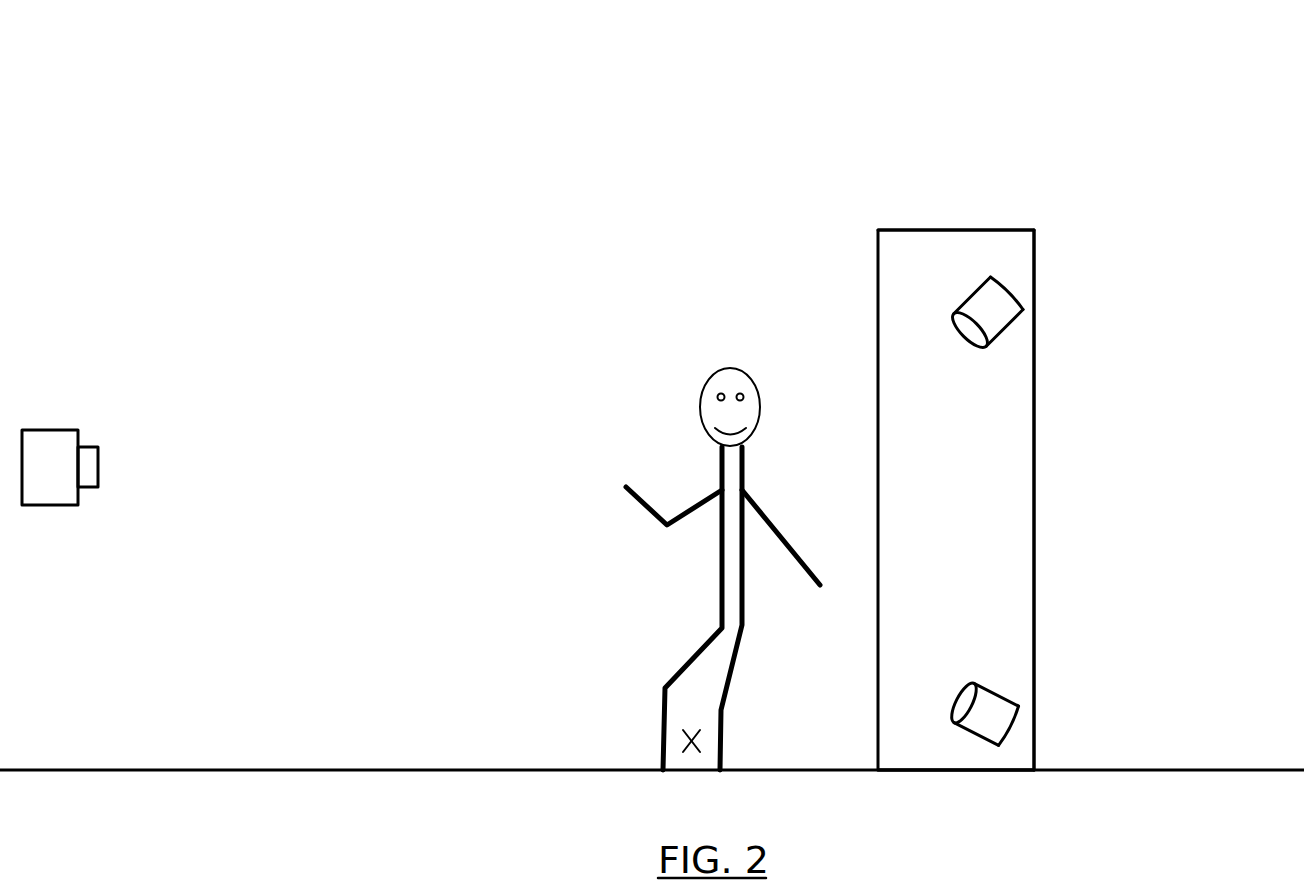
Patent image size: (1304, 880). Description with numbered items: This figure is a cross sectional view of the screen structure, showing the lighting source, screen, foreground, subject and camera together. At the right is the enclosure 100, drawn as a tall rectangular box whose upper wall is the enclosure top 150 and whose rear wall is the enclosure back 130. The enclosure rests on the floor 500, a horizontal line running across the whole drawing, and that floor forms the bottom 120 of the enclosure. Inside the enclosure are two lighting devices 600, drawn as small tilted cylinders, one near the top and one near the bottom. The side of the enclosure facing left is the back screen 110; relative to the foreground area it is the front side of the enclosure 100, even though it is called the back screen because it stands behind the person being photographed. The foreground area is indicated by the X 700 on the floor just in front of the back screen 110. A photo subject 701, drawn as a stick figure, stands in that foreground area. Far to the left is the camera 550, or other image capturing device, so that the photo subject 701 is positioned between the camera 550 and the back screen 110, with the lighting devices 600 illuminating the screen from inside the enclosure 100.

The enclosure 100 is at (1032, 165).
The back screen 110 is at (878, 345).
The bottom 120 is at (914, 771).
The enclosure back 130 is at (1034, 475).
The enclosure top 150 is at (912, 229).
The floor 500 is at (1078, 821).
The camera 550 is at (53, 428).
The lighting devices 600 is at (1013, 317).
The foreground area 700 is at (721, 557).
The photo subject 701 is at (702, 403).